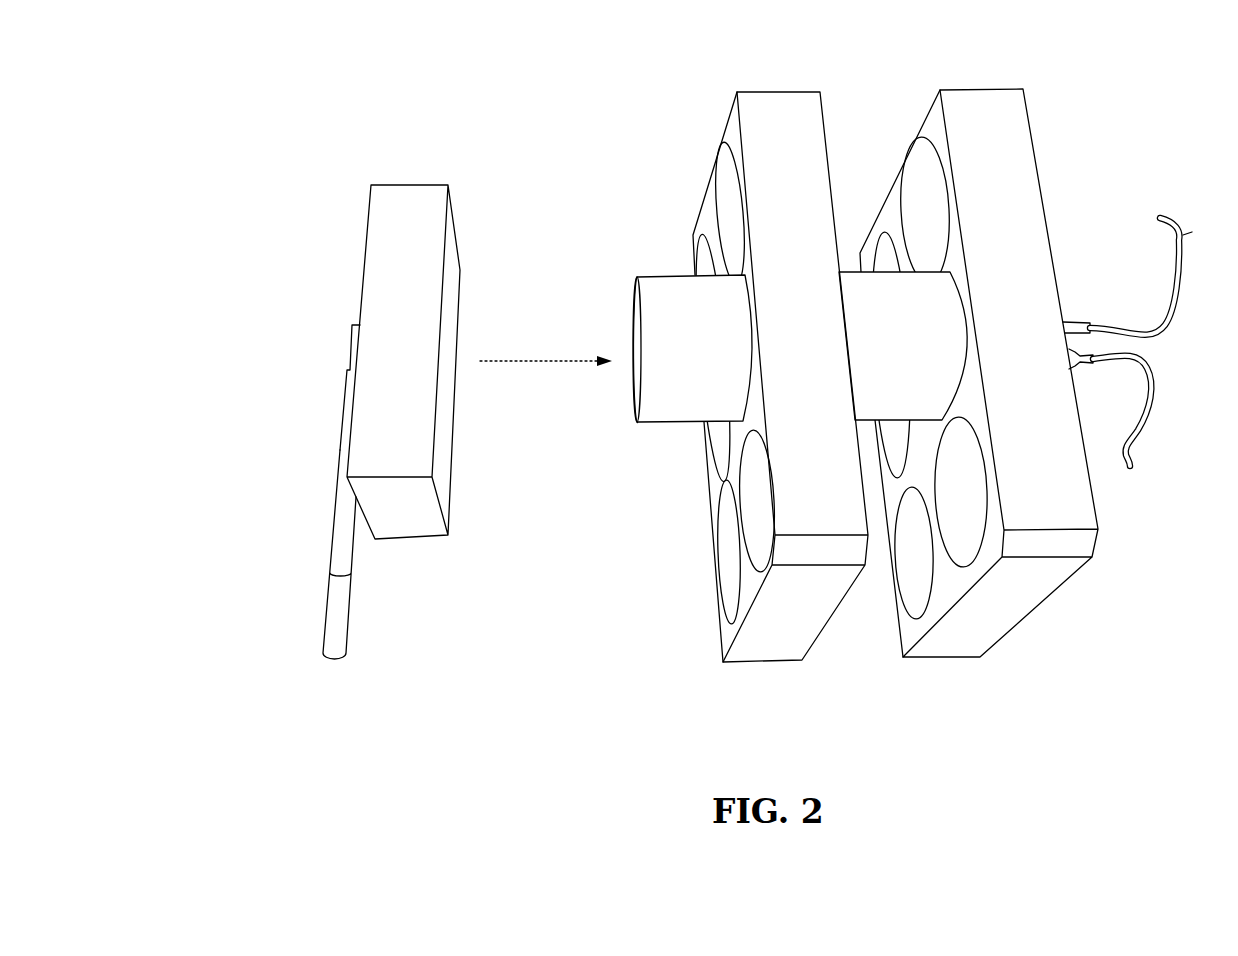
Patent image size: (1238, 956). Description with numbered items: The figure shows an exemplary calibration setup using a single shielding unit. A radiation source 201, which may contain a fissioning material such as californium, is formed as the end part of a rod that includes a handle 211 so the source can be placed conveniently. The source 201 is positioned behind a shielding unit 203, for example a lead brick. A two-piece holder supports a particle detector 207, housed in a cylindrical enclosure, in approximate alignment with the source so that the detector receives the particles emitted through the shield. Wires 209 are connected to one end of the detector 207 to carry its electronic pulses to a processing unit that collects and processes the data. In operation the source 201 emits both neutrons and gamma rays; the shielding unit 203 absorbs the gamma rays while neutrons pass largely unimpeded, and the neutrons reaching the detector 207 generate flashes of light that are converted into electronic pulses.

The radiation source 201 is at (347, 350).
The shielding unit 203 is at (415, 203).
The particle detector 207 is at (680, 403).
The wires 209 is at (1183, 297).
The handle 211 is at (332, 553).